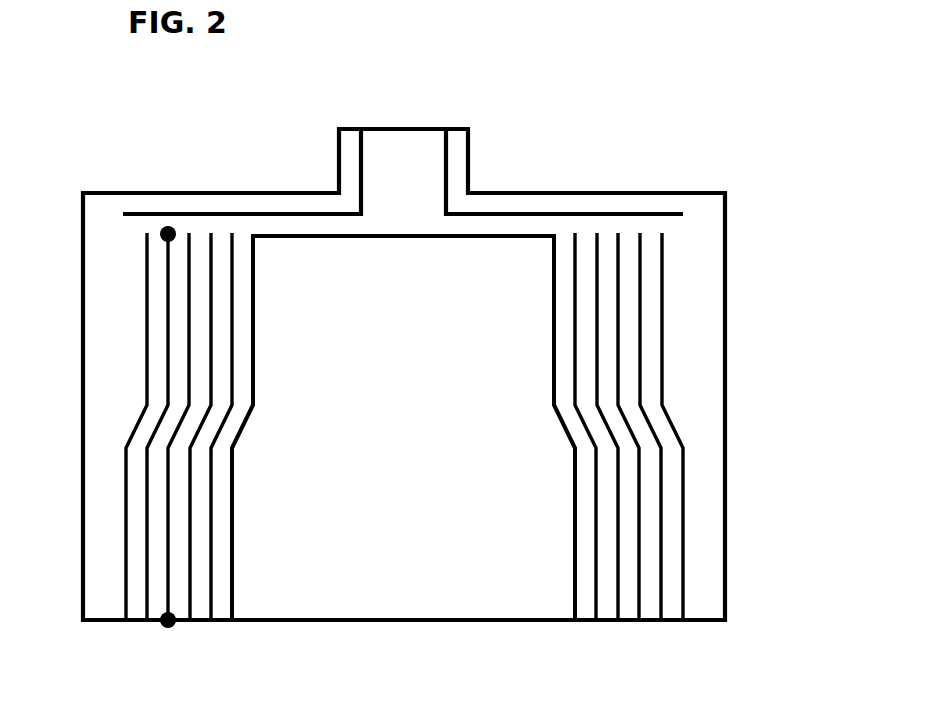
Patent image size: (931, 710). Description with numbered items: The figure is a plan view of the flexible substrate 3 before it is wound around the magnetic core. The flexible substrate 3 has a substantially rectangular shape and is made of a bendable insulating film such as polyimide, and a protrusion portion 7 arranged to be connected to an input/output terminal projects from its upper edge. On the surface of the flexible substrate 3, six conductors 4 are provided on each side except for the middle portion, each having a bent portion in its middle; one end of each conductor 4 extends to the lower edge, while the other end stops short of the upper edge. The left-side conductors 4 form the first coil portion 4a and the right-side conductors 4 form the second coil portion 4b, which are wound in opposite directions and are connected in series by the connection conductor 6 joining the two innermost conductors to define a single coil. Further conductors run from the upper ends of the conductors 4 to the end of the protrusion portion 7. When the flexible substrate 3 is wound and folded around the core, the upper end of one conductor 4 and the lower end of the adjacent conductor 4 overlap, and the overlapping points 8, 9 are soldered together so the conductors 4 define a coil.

The flexible substrate 3 is at (120, 191).
The conductors 4 is at (479, 461).
The first coil portion 4a is at (233, 632).
The second coil portion 4b is at (683, 632).
The connection conductor 6 is at (296, 233).
The protrusion portion 7 is at (409, 128).
The overlapping point 8 is at (161, 234).
The overlapping point 9 is at (168, 620).